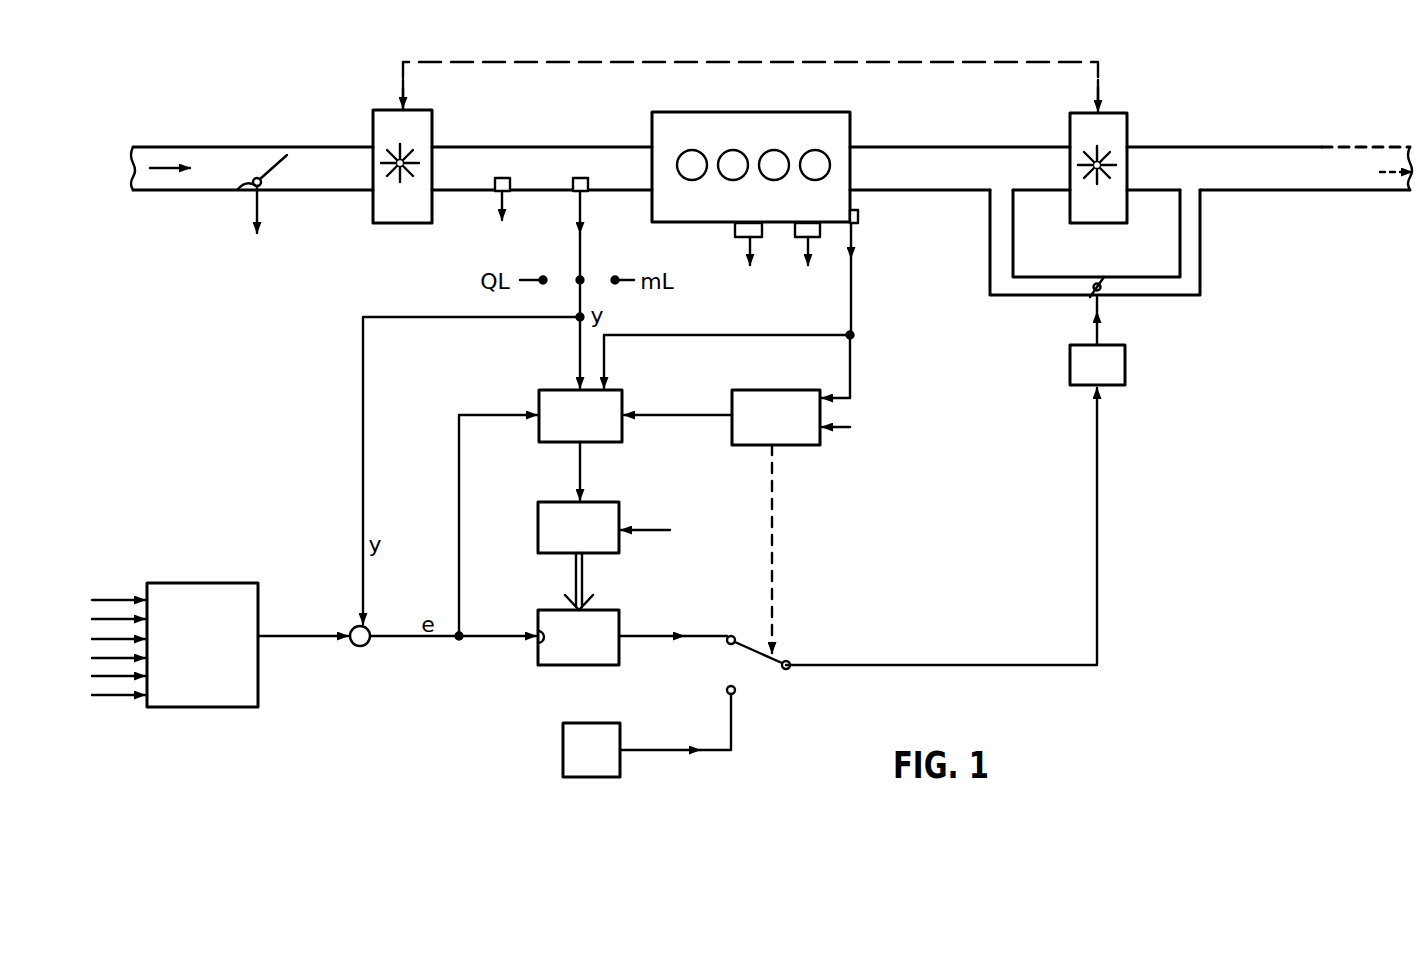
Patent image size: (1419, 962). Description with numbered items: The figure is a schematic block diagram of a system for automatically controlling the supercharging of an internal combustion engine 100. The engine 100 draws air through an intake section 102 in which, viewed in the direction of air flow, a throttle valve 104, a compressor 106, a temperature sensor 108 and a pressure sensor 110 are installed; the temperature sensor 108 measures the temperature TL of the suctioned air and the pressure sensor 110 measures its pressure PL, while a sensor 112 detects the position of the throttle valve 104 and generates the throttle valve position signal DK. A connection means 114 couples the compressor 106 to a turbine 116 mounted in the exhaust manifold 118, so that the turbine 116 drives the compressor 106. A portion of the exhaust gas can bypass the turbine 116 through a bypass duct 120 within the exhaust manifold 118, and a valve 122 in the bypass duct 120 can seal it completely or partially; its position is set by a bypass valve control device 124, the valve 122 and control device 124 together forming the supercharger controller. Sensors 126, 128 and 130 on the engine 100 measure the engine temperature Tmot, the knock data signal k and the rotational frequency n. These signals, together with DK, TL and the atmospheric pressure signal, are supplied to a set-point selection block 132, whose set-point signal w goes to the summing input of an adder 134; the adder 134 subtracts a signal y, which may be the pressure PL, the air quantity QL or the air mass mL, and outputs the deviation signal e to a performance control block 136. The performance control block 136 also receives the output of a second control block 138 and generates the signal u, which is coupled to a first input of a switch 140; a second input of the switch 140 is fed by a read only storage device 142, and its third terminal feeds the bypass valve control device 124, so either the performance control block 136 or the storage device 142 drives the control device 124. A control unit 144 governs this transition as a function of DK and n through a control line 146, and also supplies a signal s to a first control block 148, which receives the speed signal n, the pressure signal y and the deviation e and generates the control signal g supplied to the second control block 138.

The internal combustion engine 100 is at (775, 111).
The intake section 102 is at (197, 145).
The throttle valve 104 is at (275, 160).
The compressor 106 is at (432, 115).
The temperature sensor 108 is at (508, 178).
The pressure sensor 110 is at (585, 178).
The sensor 112 is at (245, 185).
The connection means 114 is at (830, 62).
The turbine 116 is at (1130, 120).
The exhaust manifold 118 is at (1348, 147).
The bypass duct 120 is at (1203, 252).
The valve 122 is at (1099, 281).
The bypass valve control device 124 is at (1127, 362).
The sensor 126 is at (733, 230).
The sensor 128 is at (797, 240).
The sensor 130 is at (860, 213).
The set-point selection block 132 is at (218, 583).
The adder 134 is at (361, 647).
The performance control block 136 is at (547, 667).
The second control block 138 is at (538, 528).
The switch 140 is at (790, 660).
The read only storage device 142 is at (594, 777).
The control unit 144 is at (767, 390).
The control line 146 is at (776, 506).
The first control block 148 is at (617, 390).